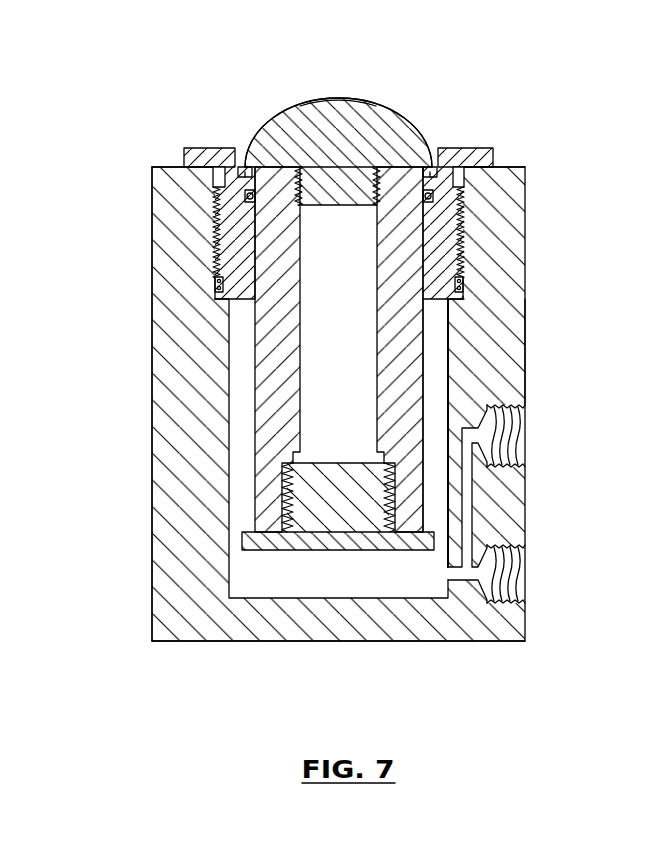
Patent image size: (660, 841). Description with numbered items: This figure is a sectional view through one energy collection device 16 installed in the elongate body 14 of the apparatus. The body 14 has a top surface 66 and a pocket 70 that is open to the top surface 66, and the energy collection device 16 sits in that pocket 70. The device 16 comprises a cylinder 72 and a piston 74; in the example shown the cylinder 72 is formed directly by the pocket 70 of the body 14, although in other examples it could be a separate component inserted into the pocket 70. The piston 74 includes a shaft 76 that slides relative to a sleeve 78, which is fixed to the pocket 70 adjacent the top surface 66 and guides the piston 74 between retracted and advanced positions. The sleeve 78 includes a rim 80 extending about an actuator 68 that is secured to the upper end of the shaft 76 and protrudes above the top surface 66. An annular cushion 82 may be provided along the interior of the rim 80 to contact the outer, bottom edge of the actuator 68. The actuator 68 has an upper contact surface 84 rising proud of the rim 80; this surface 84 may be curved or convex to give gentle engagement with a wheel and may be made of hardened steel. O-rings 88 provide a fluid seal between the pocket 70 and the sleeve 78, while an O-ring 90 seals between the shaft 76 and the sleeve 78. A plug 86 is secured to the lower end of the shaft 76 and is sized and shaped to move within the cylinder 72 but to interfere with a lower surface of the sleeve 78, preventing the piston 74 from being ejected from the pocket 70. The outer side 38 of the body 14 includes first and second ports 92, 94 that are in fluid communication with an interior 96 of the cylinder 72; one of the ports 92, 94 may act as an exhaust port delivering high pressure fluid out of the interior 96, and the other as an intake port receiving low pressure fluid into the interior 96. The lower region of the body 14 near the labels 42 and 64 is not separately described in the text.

The elongate body 14 is at (163, 583).
The energy collection device 16 is at (271, 107).
The outer side 38 is at (529, 507).
The housing side wall 42 is at (150, 542).
The housing bottom surface 64 is at (288, 645).
The top surface 66 is at (511, 164).
The actuator 68 is at (380, 118).
The pocket 70 is at (451, 355).
The cylinder 72 is at (450, 390).
The piston 74 is at (428, 320).
The shaft 76 is at (403, 242).
The sleeve 78 is at (445, 207).
The rim 80 is at (465, 148).
The annular cushion 82 is at (246, 166).
The upper contact surface 84 is at (337, 96).
The plug 86 is at (317, 508).
The O-rings 88 is at (215, 281).
The O-ring 90 is at (244, 194).
The first port 92 is at (529, 582).
The second port 94 is at (529, 427).
The interior 96 is at (325, 588).